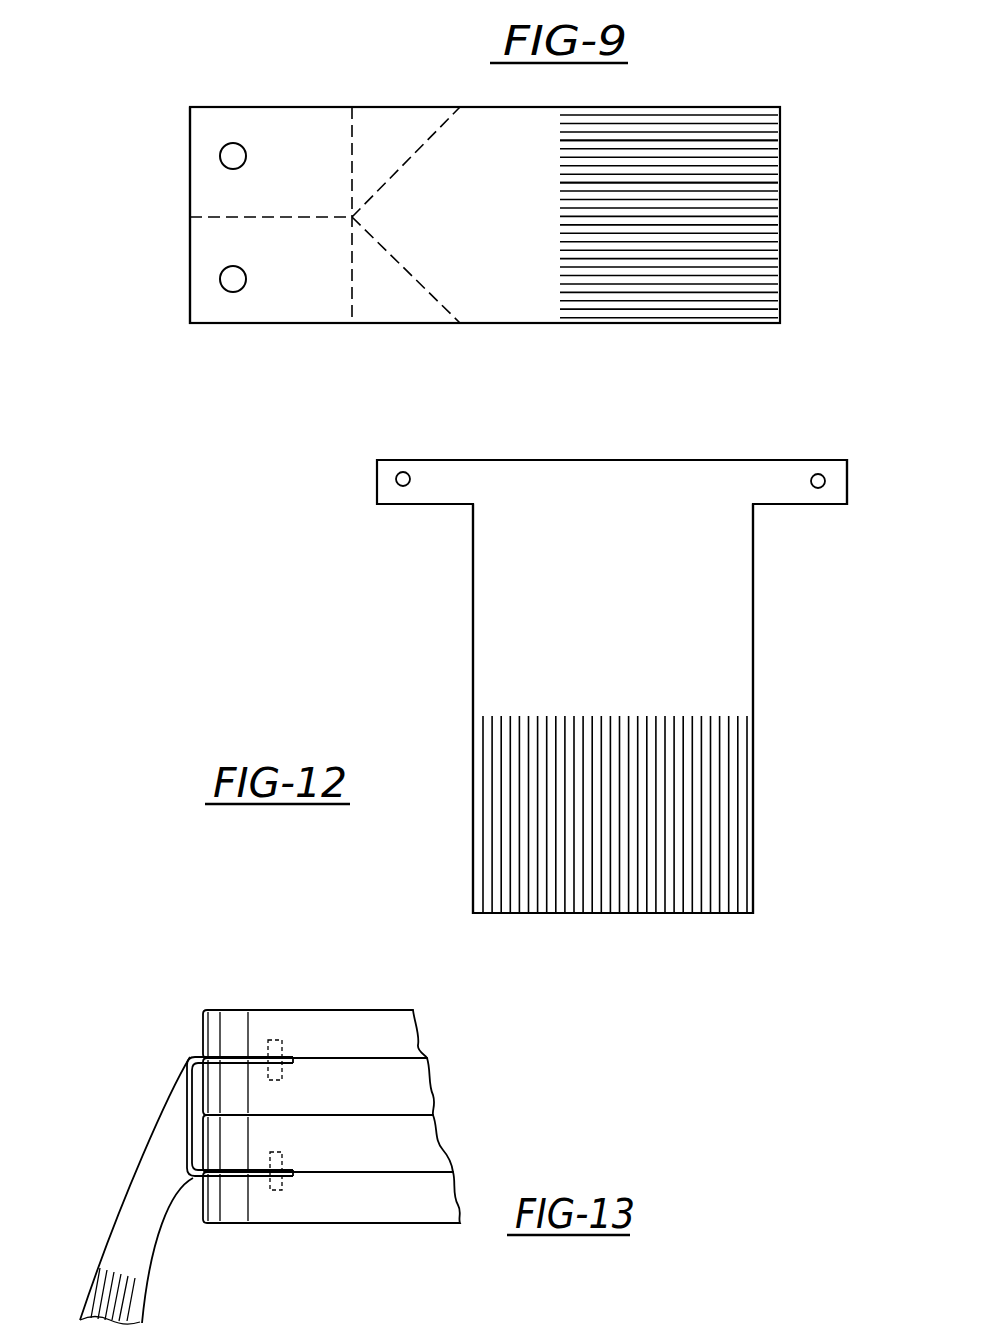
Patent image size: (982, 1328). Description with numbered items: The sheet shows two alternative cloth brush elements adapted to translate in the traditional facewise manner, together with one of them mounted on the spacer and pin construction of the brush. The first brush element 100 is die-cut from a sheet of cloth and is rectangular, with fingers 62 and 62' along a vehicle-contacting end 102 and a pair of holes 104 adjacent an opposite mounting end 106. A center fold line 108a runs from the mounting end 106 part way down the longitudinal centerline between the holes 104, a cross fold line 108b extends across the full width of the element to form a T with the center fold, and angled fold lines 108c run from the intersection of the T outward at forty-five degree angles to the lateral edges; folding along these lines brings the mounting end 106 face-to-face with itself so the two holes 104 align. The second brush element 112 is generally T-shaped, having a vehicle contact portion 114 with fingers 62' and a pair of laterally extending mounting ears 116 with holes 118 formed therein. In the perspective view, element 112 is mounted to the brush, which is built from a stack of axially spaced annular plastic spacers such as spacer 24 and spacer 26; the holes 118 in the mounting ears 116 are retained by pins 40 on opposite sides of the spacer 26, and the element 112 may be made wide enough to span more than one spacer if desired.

In FIG. 9, the brush element 100 is at (168, 106).
In FIG. 9, the vehicle-contacting end 102 is at (722, 98).
In FIG. 9, the holes 104 is at (243, 147).
In FIG. 9, the mounting end 106 is at (205, 329).
In FIG. 9, the center fold line 108a is at (263, 217).
In FIG. 9, the cross fold line 108b is at (348, 287).
In FIG. 9, the angled fold lines 108c is at (421, 143).
In FIG. 9, the fingers 62 is at (717, 222).
In FIG. 12, the brush element 112 is at (426, 590).
In FIG. 13, the brush element 112 is at (162, 1108).
In FIG. 12, the vehicle contact portion 114 is at (745, 653).
In FIG. 12, the mounting ears 116 is at (377, 470).
In FIG. 12, the holes 118 is at (405, 487).
In FIG. 12, the fingers 62' is at (620, 849).
In FIG. 13, the spacer 24 is at (355, 1028).
In FIG. 13, the spacer 26 is at (423, 1097).
In FIG. 13, the pins 40 is at (272, 1040).